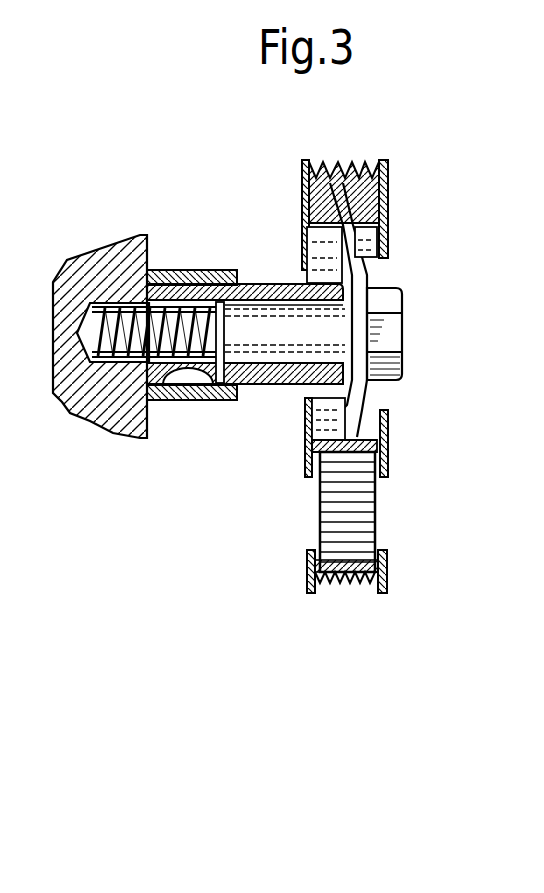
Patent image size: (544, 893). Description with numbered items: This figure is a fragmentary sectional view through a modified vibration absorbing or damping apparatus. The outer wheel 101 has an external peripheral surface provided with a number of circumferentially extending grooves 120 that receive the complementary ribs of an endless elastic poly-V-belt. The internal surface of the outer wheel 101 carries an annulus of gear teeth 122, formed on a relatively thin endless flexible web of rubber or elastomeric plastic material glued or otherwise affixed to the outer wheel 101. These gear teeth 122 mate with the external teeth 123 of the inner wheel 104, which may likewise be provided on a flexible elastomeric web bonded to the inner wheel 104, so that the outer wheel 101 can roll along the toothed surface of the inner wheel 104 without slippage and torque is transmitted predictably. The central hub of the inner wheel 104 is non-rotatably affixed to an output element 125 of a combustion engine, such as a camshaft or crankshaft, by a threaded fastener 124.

The outer wheel 101 is at (387, 575).
The inner wheel 104 is at (353, 398).
The circumferentially extending grooves 120 is at (333, 577).
The gear teeth 122 is at (355, 533).
The external teeth 123 is at (303, 202).
The threaded fastener 124 is at (407, 320).
The output element 125 is at (108, 427).